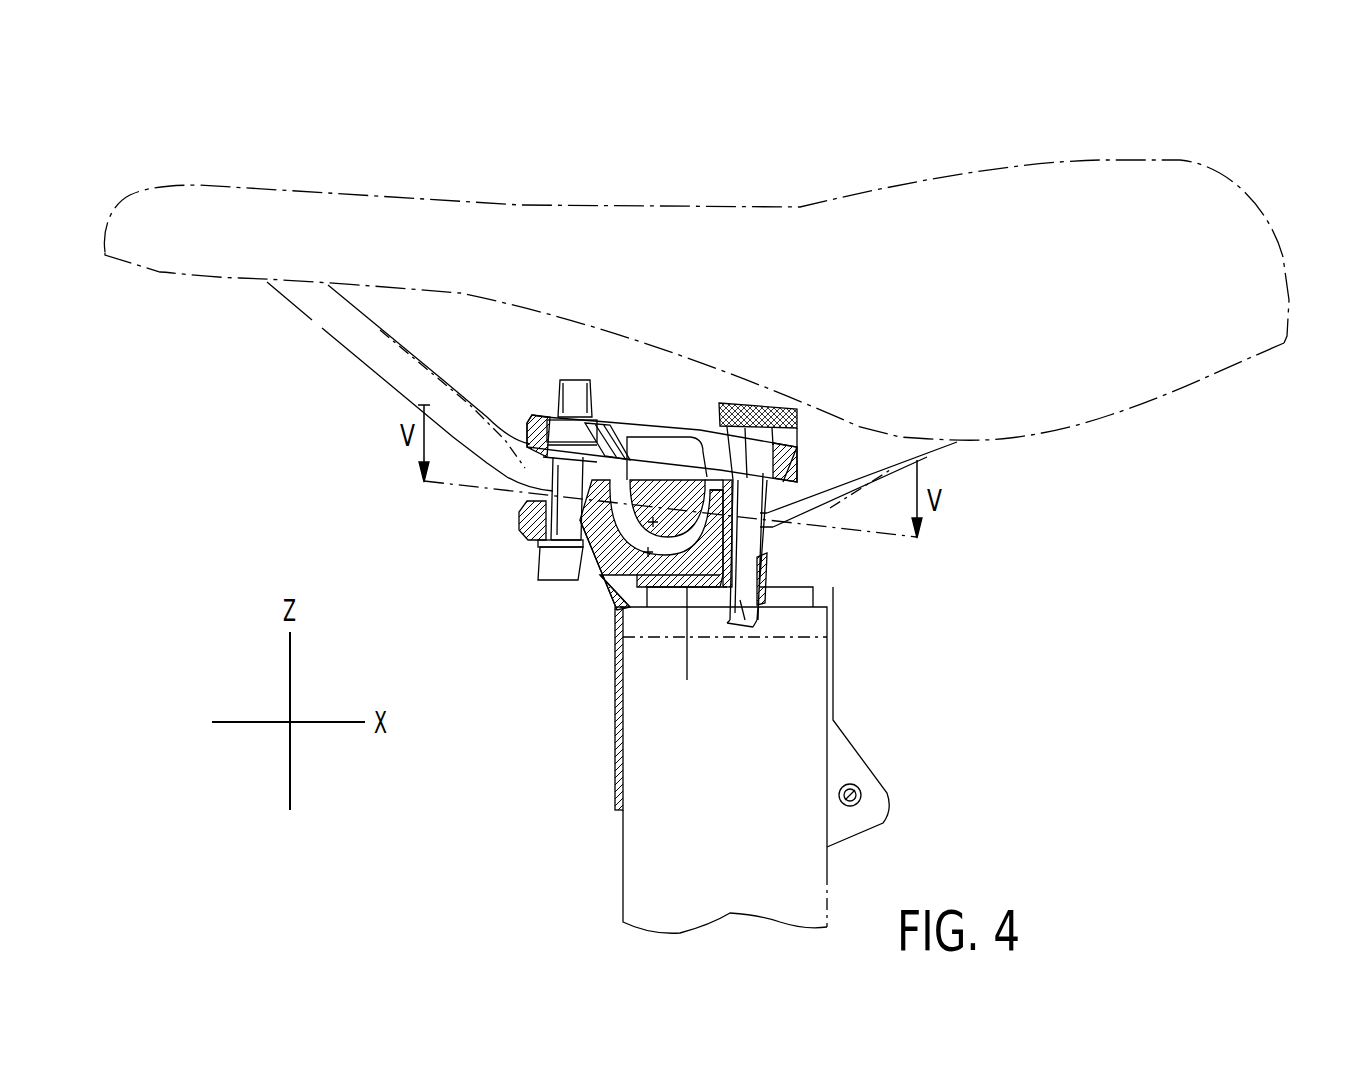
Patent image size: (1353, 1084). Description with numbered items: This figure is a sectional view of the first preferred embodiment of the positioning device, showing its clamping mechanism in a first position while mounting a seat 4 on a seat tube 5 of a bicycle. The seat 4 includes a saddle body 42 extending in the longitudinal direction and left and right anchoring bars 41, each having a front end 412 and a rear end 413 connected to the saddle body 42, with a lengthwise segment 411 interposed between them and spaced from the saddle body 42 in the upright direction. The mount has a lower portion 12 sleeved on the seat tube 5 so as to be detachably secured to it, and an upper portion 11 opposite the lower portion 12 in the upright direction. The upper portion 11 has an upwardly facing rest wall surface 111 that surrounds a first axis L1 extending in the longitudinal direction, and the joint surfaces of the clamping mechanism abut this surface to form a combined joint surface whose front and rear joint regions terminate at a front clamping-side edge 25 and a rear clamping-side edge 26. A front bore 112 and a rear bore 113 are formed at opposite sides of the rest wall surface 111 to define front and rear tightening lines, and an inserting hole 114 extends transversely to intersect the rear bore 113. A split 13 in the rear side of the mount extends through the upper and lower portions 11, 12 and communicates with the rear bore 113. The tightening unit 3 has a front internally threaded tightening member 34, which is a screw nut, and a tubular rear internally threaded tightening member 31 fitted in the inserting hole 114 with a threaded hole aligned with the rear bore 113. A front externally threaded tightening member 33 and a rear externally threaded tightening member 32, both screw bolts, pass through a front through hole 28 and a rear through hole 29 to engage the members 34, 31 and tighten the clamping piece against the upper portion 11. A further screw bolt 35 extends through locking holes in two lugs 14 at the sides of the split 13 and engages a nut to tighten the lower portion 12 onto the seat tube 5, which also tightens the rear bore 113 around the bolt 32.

The seat 4 is at (696, 255).
The saddle body 42 is at (933, 188).
The anchoring bar 41 is at (661, 335).
The lengthwise segment 411 is at (676, 432).
The front end 412 is at (353, 337).
The rear end 413 is at (927, 457).
The tightening unit 3 is at (528, 510).
The upper portion 11 is at (500, 545).
The rest wall surface 111 is at (585, 590).
The front bore 112 is at (550, 567).
The rear bore 113 is at (775, 525).
The inserting hole 114 is at (773, 530).
The lower portion 12 is at (600, 795).
The split 13 is at (833, 705).
The lug 14 is at (870, 780).
The seat tube 5 is at (620, 878).
The front clamping-side edge 25 is at (630, 427).
The rear clamping-side edge 26 is at (716, 470).
The front through hole 28 is at (558, 510).
The rear through hole 29 is at (797, 483).
The rear internally threaded tightening member 31 is at (785, 612).
The rear externally threaded tightening member 32 is at (740, 600).
The front externally threaded tightening member 33 is at (540, 590).
The front internally threaded tightening member 34 is at (562, 380).
The screw bolt 35 is at (862, 806).
The first axis L1 is at (690, 655).